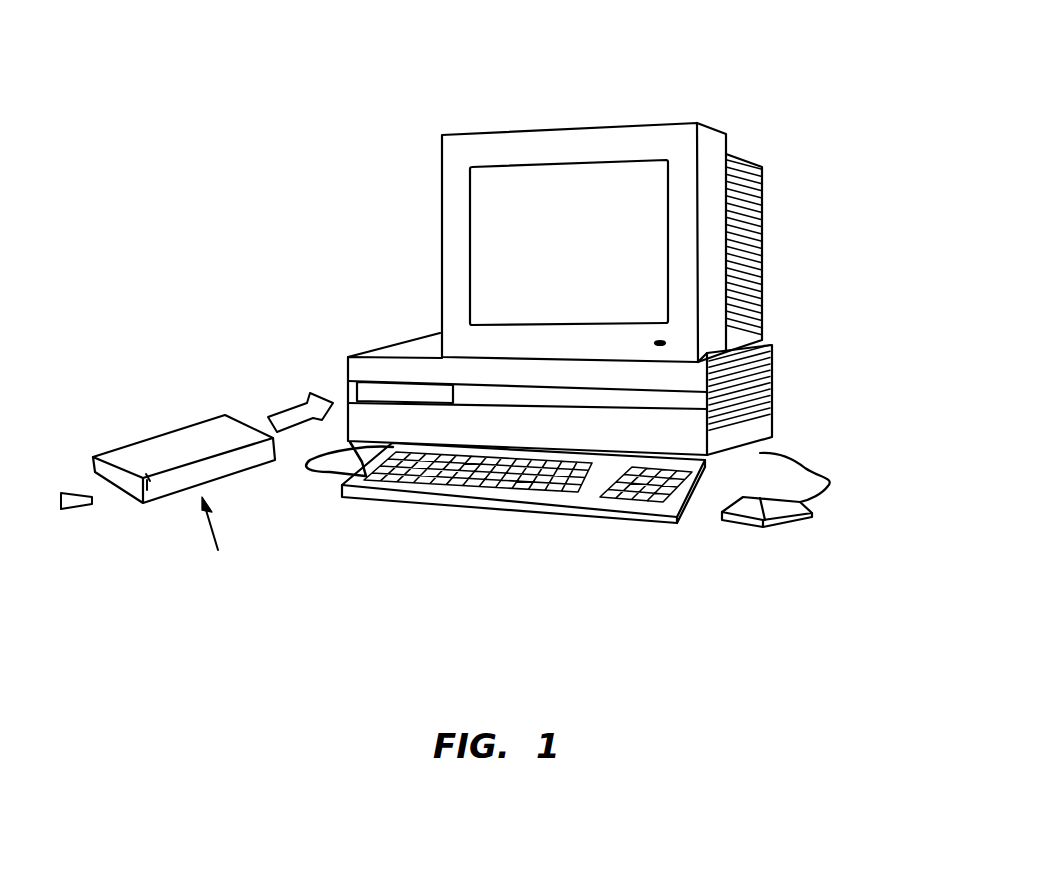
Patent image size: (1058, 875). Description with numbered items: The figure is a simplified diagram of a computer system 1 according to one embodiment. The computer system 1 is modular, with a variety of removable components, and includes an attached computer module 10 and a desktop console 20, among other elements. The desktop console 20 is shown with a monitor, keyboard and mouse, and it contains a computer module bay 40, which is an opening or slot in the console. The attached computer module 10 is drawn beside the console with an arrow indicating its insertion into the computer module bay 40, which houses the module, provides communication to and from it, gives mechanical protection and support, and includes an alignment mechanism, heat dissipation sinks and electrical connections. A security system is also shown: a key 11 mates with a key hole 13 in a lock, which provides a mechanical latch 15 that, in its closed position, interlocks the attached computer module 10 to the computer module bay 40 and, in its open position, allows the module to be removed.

The computer system 1 is at (932, 7).
The attached computer module 10 is at (142, 503).
The key 11 is at (64, 495).
The key hole 13 is at (143, 476).
The mechanical latch 15 is at (147, 476).
The desktop console 20 is at (777, 397).
The computer module bay 40 is at (347, 357).